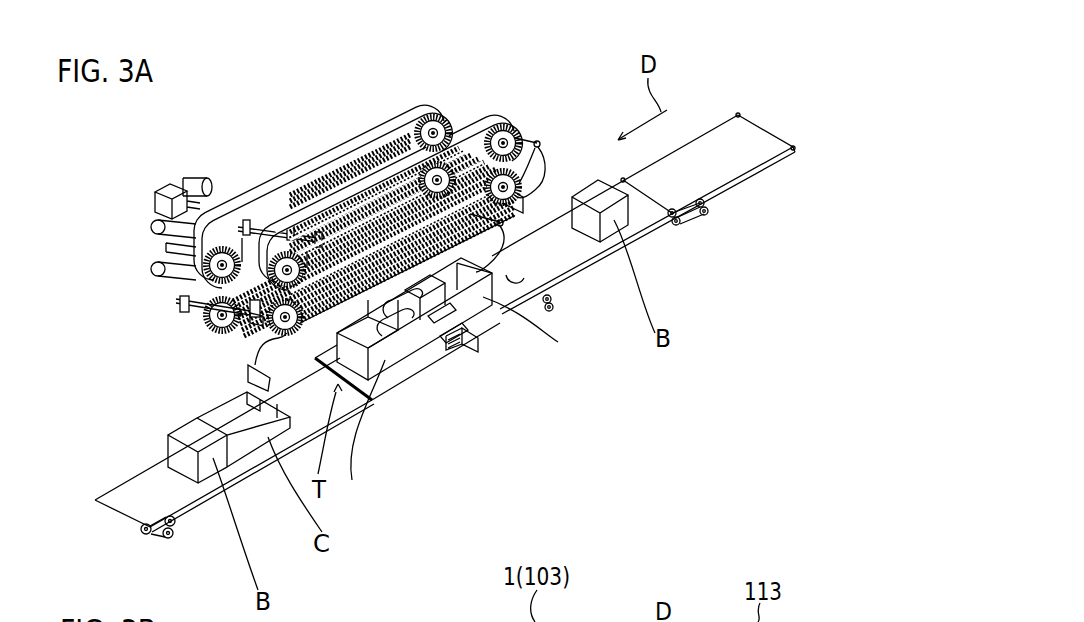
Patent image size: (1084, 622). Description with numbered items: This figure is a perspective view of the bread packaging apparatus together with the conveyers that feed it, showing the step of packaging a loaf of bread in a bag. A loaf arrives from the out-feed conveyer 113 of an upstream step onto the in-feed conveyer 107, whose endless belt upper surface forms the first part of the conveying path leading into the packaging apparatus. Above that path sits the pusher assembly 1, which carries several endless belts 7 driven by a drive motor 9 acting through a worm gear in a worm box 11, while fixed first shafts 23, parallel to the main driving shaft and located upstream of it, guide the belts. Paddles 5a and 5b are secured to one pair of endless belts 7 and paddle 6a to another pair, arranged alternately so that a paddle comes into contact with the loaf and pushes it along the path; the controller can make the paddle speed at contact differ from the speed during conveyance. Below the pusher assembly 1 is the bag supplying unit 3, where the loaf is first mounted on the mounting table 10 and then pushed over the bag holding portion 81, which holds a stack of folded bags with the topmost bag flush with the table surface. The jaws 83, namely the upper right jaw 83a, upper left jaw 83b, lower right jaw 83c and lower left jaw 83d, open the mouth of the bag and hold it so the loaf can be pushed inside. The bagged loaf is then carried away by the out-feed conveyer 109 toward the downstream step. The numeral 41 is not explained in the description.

The pusher assembly 1 is at (379, 199).
The bag supplying unit 3 is at (482, 411).
The paddle 5a is at (246, 374).
The paddle 5b is at (530, 195).
The paddle 6a is at (258, 320).
The endless belts 7 is at (510, 125).
The drive motor 9 is at (200, 178).
The mounting table 10 is at (510, 278).
The worm box 11 is at (166, 188).
The first shafts 23 is at (517, 133).
The transport belts 41 is at (395, 172).
The bag holding portion 81 is at (473, 352).
The jaws 83 is at (465, 426).
The upper right jaw 83a is at (392, 340).
The upper left jaw 83b is at (458, 348).
The lower right jaw 83c is at (408, 330).
The lower left jaw 83d is at (437, 338).
The in-feed conveyer 107 is at (663, 249).
The out-feed conveyer 109 is at (128, 415).
The out-feed conveyer 113 is at (736, 98).